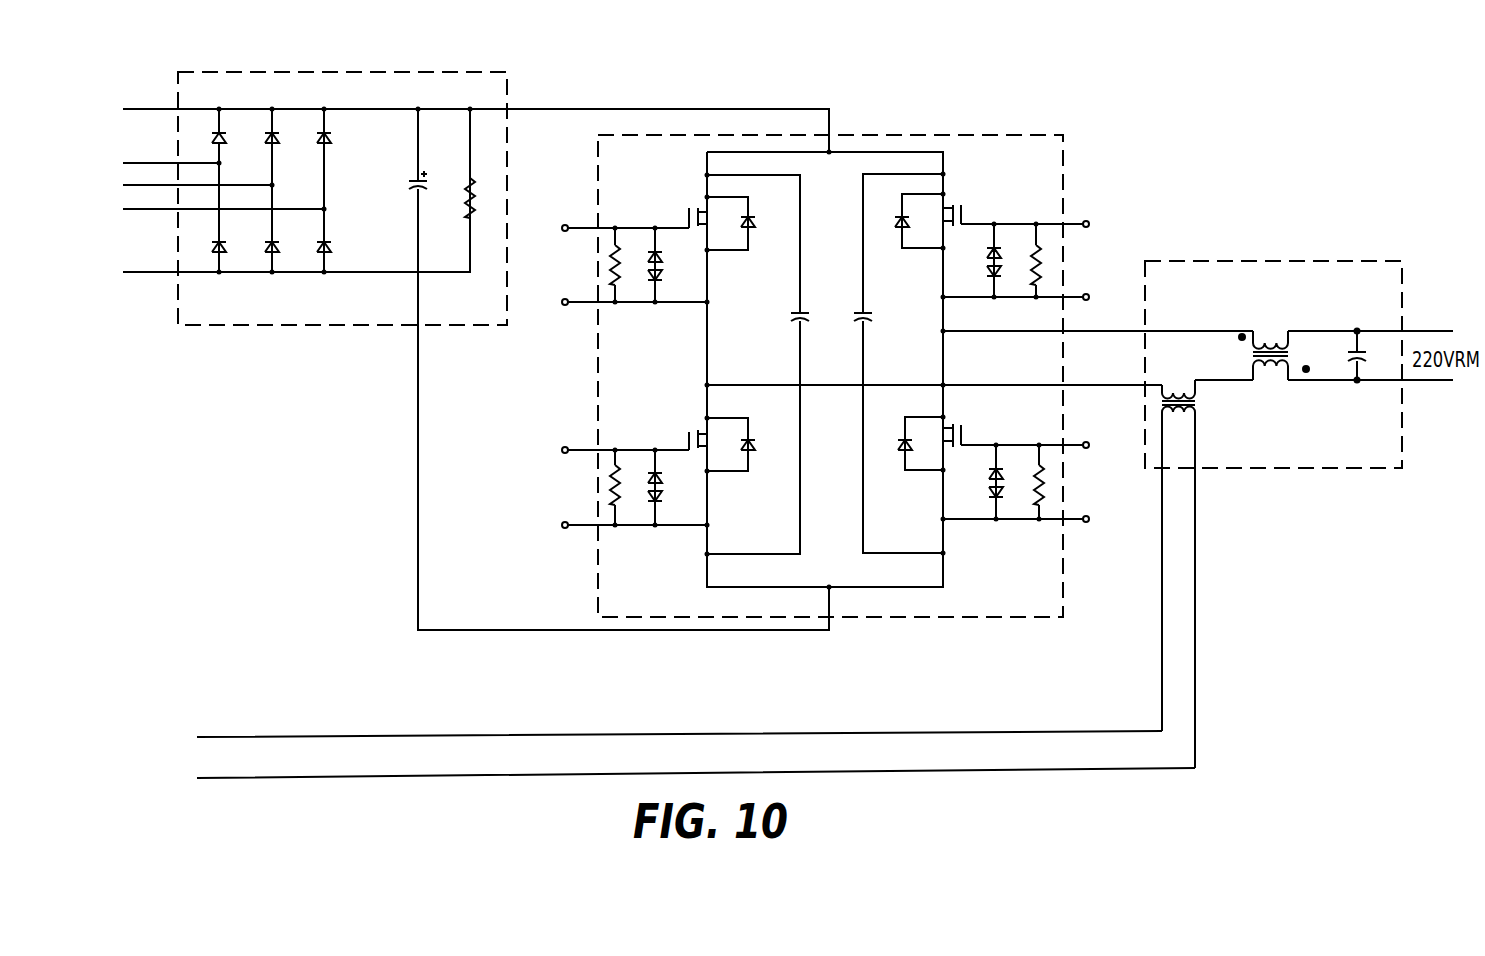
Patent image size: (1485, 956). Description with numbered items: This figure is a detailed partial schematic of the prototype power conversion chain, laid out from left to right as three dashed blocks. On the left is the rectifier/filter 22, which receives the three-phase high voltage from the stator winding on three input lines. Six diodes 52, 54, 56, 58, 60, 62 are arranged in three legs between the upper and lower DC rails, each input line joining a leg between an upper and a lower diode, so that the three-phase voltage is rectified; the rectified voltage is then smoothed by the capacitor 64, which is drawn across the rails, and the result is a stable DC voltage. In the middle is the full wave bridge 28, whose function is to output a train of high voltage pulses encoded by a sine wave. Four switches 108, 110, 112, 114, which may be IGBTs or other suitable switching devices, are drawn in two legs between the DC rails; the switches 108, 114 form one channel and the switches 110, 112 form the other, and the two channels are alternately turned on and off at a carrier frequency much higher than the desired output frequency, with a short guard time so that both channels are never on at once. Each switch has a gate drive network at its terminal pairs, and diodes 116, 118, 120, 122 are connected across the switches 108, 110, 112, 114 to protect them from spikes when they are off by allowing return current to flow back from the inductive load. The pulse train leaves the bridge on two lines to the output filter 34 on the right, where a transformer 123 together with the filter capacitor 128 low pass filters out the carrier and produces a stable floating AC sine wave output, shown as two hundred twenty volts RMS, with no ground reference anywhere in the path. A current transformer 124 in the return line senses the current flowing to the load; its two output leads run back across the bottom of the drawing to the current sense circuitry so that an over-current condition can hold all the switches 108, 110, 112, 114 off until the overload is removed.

The rectifier/filter 22 is at (512, 85).
The full wave bridge 28 is at (1068, 182).
The output filter 34 is at (1339, 254).
The diode 52 is at (224, 136).
The diode 54 is at (277, 136).
The diode 56 is at (329, 136).
The diode 58 is at (224, 250).
The diode 60 is at (277, 250).
The diode 62 is at (329, 250).
The capacitor 64 is at (429, 184).
The switch 108 is at (694, 206).
The switch 110 is at (694, 428).
The switch 112 is at (960, 190).
The switch 114 is at (961, 424).
The diode 116 is at (754, 224).
The diode 118 is at (754, 446).
The diode 120 is at (896, 222).
The diode 122 is at (902, 445).
The output transformer 123 is at (1270, 340).
The current transformer 124 is at (1198, 402).
The filter capacitor 128 is at (1348, 357).